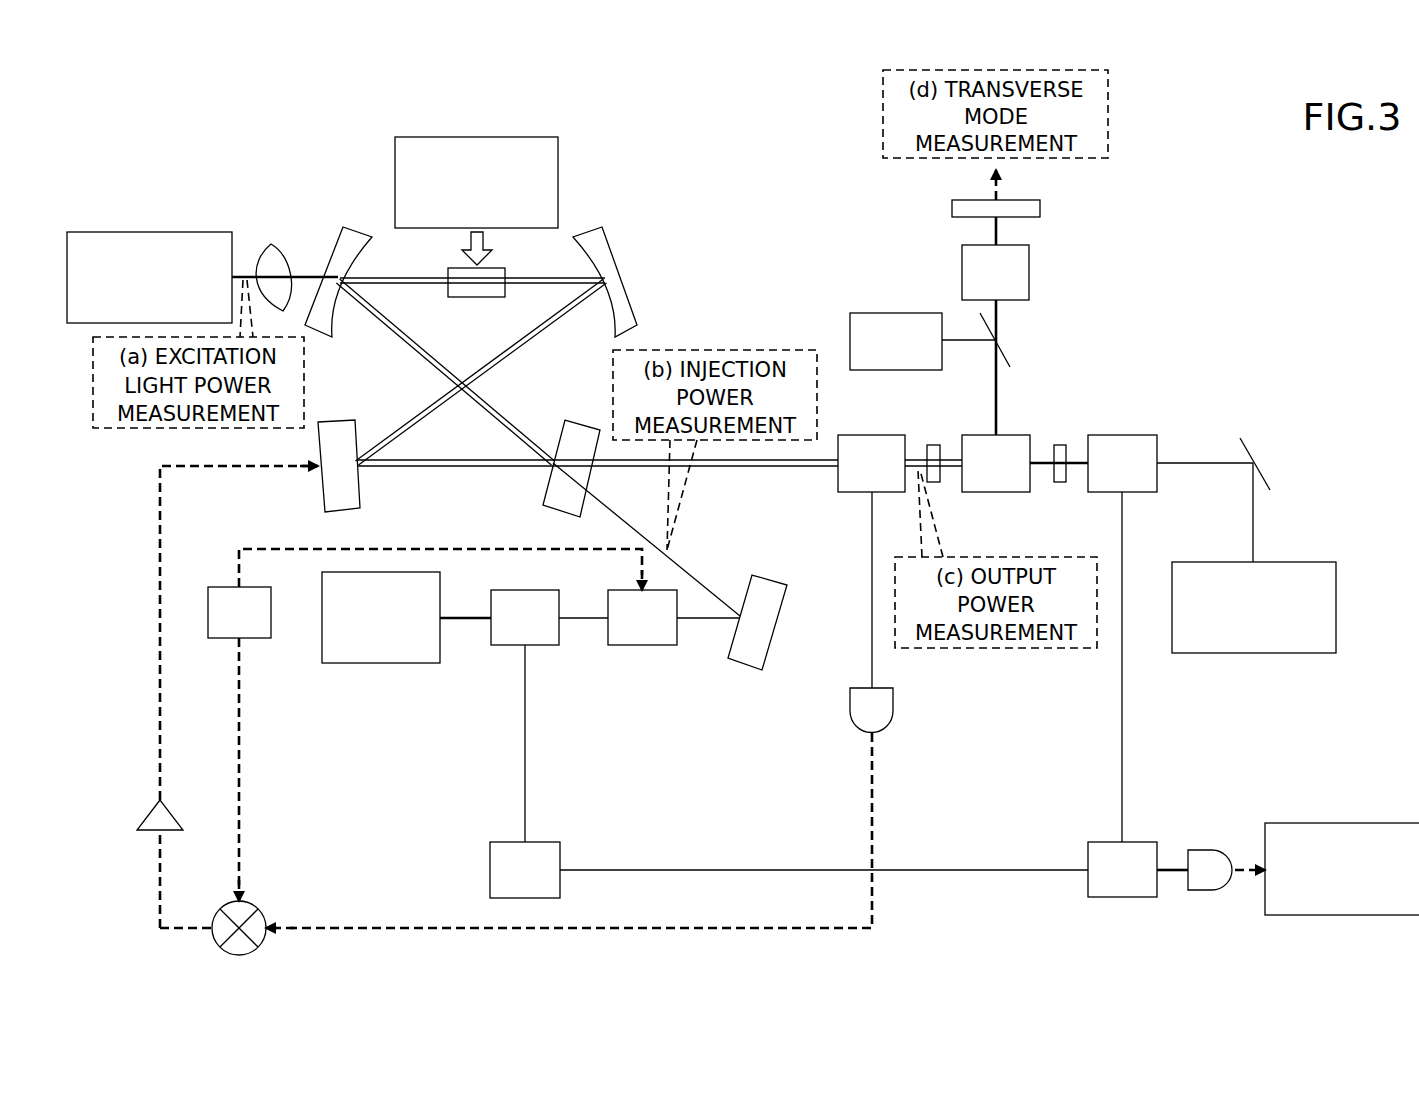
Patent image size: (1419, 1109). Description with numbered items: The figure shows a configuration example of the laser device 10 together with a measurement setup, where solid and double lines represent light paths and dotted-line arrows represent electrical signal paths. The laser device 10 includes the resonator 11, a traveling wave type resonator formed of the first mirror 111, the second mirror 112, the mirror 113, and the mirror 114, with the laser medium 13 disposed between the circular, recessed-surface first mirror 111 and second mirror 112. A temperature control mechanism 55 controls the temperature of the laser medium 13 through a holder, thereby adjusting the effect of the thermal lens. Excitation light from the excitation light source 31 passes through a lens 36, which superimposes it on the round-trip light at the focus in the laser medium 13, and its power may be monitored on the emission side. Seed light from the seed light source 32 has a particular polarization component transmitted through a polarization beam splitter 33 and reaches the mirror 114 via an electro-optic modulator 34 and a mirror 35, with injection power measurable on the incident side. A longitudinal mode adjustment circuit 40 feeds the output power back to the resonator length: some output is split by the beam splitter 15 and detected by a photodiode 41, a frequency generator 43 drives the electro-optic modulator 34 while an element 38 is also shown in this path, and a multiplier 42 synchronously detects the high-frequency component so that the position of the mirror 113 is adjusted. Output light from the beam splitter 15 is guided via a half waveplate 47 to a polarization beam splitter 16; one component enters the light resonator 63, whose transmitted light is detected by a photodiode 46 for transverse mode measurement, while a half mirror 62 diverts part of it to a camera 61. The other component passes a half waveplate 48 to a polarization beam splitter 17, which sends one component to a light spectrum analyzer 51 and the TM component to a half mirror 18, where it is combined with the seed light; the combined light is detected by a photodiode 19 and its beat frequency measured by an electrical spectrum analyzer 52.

The laser device 10 is at (781, 144).
The resonator 11 is at (464, 359).
The laser medium 13 is at (505, 278).
The beam splitter 15 is at (866, 435).
The polarization beam splitter 16 is at (995, 492).
The polarization beam splitter 17 is at (1122, 435).
The half mirror 18 is at (1092, 841).
The photodiode 19 is at (1200, 850).
The excitation light source 31 is at (145, 232).
The seed light source 32 is at (380, 663).
The polarization beam splitter 33 is at (545, 590).
The electro-optic modulator 34 is at (641, 645).
The mirror 35 is at (745, 670).
The lens 36 is at (266, 244).
The acousto-optic modulator 38 is at (545, 842).
The longitudinal mode adjustment circuit 40 is at (123, 724).
The photodiode 41 is at (893, 690).
The multiplier 42 is at (262, 912).
The frequency generator 43 is at (218, 587).
The photodiode 46 is at (1020, 200).
The half waveplate 47 is at (932, 445).
The half waveplate 48 is at (1060, 445).
The light spectrum analyzer 51 is at (1253, 653).
The electrical spectrum analyzer 52 is at (1348, 823).
The temperature control mechanism 55 is at (475, 137).
The camera 61 is at (892, 313).
The half mirror 62 is at (1007, 352).
The light resonator 63 is at (1029, 272).
The first mirror 111 is at (346, 226).
The second mirror 112 is at (592, 226).
The mirror 113 is at (340, 420).
The mirror 114 is at (580, 420).